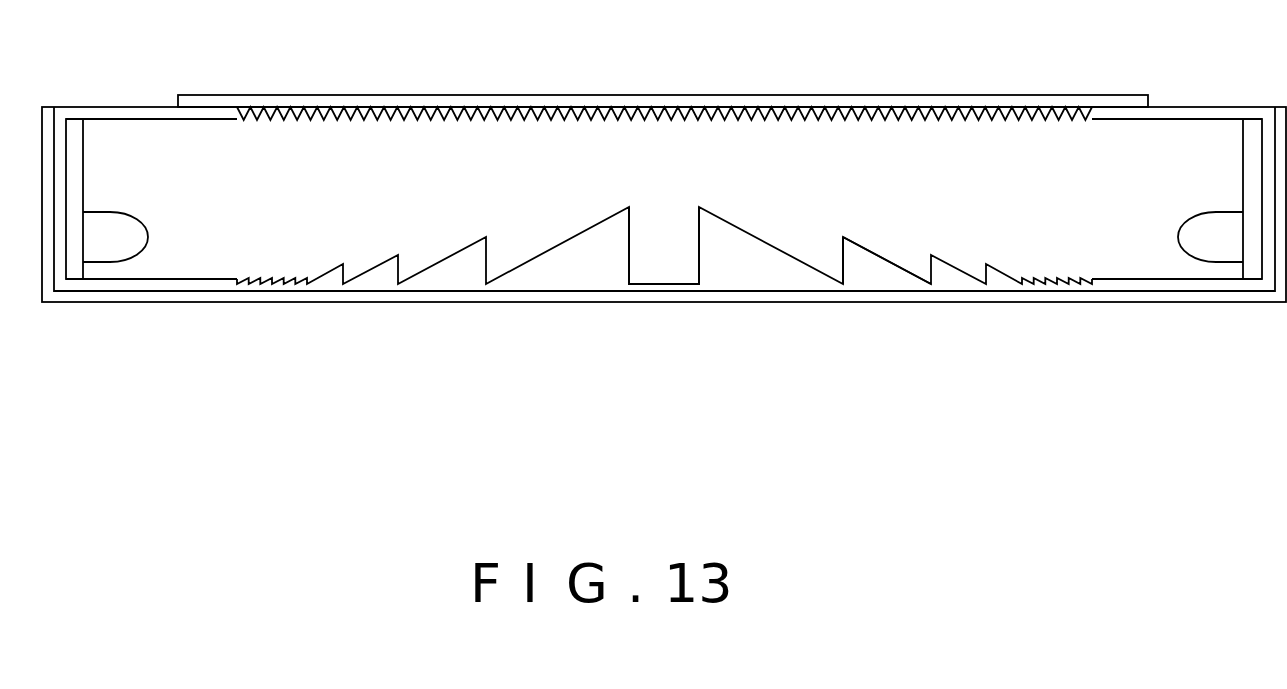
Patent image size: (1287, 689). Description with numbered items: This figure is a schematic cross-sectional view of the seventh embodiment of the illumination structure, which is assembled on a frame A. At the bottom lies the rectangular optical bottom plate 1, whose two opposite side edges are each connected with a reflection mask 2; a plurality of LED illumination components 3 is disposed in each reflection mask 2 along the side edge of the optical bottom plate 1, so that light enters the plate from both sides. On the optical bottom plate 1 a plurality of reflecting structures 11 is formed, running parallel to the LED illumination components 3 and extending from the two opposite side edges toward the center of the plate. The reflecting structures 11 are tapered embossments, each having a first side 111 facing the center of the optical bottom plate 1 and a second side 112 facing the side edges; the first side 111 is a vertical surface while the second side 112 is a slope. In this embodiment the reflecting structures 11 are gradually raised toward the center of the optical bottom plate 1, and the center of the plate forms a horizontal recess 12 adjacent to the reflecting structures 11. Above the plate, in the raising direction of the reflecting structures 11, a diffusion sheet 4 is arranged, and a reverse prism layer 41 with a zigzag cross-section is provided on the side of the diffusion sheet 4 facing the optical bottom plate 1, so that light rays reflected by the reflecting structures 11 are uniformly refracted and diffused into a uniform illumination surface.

The optical bottom plate 1 is at (920, 290).
The reflecting structures 11 is at (830, 370).
The first side 111 is at (842, 272).
The second side 112 is at (880, 257).
The horizontal recess 12 is at (661, 288).
The reflection mask 2 is at (1202, 115).
The LED illumination components 3 is at (1218, 250).
The diffusion sheet 4 is at (973, 102).
The reverse prism layer 41 is at (883, 113).
The frame A is at (473, 300).